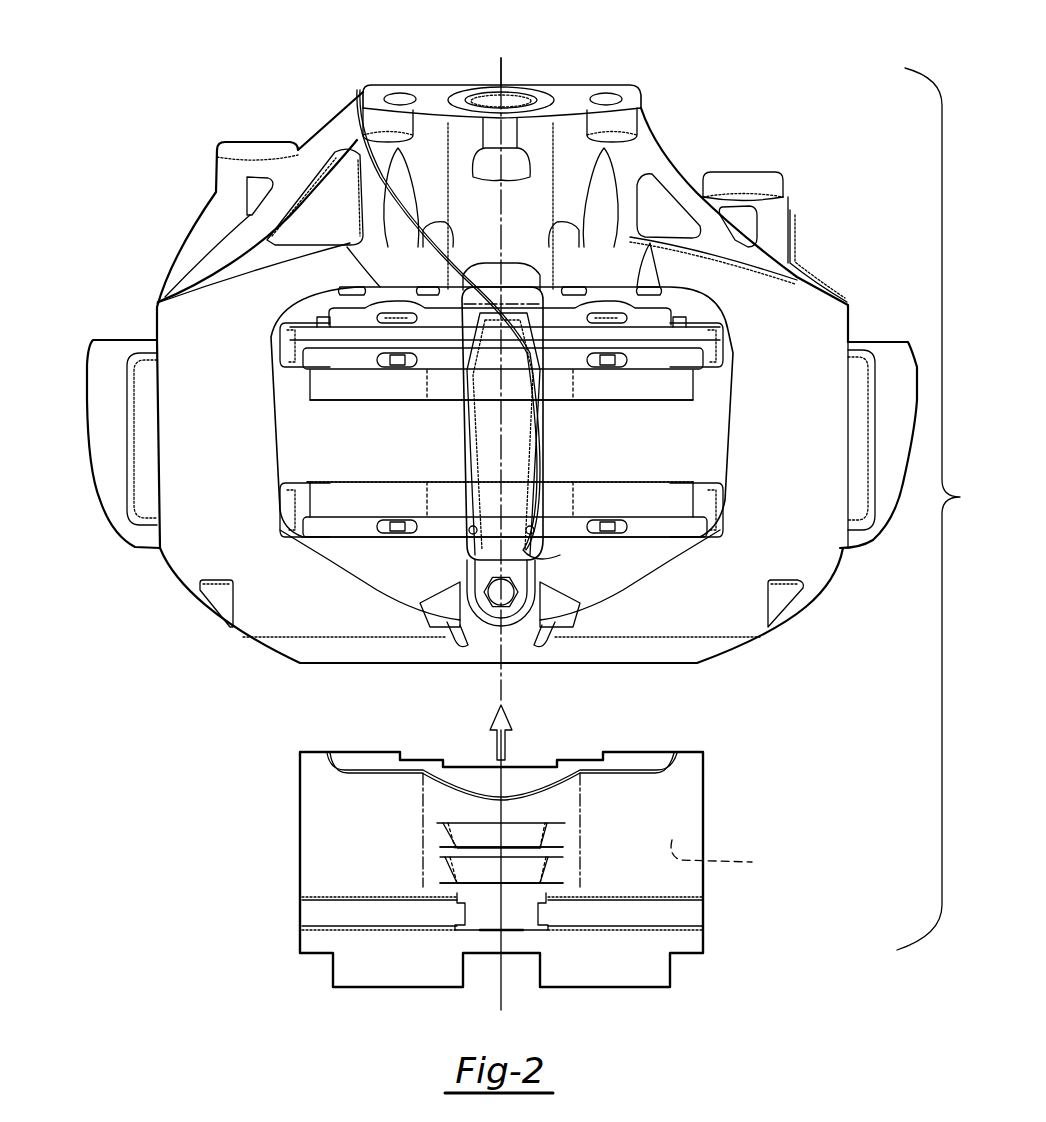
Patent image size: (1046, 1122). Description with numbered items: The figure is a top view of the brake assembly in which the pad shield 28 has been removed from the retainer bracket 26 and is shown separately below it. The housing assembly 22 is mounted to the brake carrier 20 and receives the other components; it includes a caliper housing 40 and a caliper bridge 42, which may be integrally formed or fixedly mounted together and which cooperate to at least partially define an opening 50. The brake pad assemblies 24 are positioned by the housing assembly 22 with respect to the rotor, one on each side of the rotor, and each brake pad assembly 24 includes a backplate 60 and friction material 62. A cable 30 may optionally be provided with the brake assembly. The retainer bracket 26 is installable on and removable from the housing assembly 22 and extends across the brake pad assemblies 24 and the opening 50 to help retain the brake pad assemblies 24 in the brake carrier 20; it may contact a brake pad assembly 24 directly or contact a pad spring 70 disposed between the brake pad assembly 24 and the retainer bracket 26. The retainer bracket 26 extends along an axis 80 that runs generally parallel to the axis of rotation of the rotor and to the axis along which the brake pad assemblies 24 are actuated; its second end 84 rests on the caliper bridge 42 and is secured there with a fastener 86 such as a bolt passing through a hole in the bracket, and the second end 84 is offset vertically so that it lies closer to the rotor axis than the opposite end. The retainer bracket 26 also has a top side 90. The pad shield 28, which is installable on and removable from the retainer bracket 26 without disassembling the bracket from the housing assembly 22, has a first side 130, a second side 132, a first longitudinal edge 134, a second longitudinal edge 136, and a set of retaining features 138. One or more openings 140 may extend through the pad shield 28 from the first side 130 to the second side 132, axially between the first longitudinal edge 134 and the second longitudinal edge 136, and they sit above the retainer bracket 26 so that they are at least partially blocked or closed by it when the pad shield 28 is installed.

The brake carrier 20 is at (88, 427).
The housing assembly 22 is at (812, 222).
The brake pad assemblies 24 is at (304, 358).
The retainer bracket 26 is at (462, 470).
The pad shield 28 is at (300, 857).
The cable 30 is at (470, 270).
The caliper housing 40 is at (621, 85).
The caliper bridge 42 is at (355, 665).
The opening 50 is at (688, 425).
The backplate 60 is at (715, 357).
The friction material 62 is at (648, 482).
The pad spring 70 is at (397, 370).
The axis 80 is at (500, 70).
The second end 84 is at (500, 623).
The fastener 86 is at (510, 607).
The top side 90 is at (540, 430).
The first side 130 is at (673, 808).
The second side 132 is at (729, 856).
The first longitudinal edge 134 is at (468, 764).
The second longitudinal edge 136 is at (557, 988).
The retaining features 138 is at (540, 835).
The openings 140 is at (480, 842).